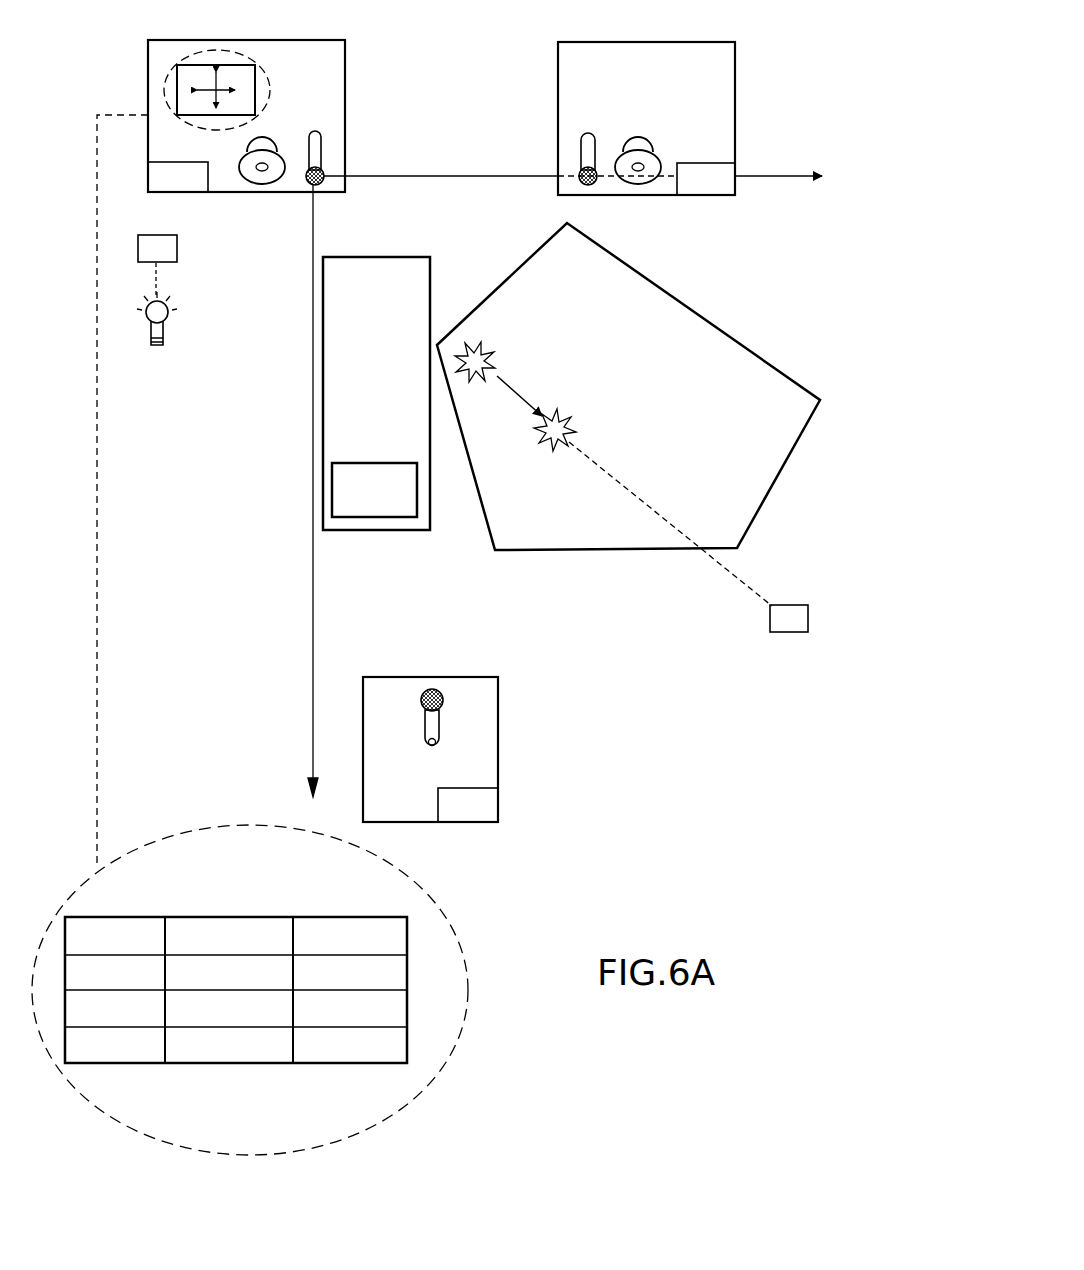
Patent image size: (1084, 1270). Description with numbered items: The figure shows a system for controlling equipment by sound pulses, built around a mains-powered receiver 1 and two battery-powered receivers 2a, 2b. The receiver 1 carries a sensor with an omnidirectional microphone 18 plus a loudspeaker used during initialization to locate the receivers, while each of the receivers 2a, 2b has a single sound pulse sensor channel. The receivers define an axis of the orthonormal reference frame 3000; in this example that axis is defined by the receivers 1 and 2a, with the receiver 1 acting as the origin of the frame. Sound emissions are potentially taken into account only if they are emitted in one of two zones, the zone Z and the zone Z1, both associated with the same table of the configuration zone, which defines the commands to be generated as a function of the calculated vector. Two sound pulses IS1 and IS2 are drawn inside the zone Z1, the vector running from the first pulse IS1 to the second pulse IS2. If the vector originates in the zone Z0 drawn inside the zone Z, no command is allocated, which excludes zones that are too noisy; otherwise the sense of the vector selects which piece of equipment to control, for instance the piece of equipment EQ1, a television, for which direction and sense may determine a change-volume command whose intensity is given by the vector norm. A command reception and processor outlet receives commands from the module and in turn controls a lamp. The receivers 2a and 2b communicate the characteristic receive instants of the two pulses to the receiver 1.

The receiver 1 is at (243, 40).
The omnidirectional microphone 18 is at (315, 131).
The orthonormal reference frame 3000 is at (450, 176).
The receiver 2a is at (609, 42).
The receiver 2b is at (498, 752).
The zone Z is at (376, 257).
The zone Z0 is at (385, 463).
The zone Z1 is at (472, 478).
The sound pulse IS1 is at (498, 347).
The sound pulse IS2 is at (555, 406).
The piece of equipment EQ1 is at (808, 622).